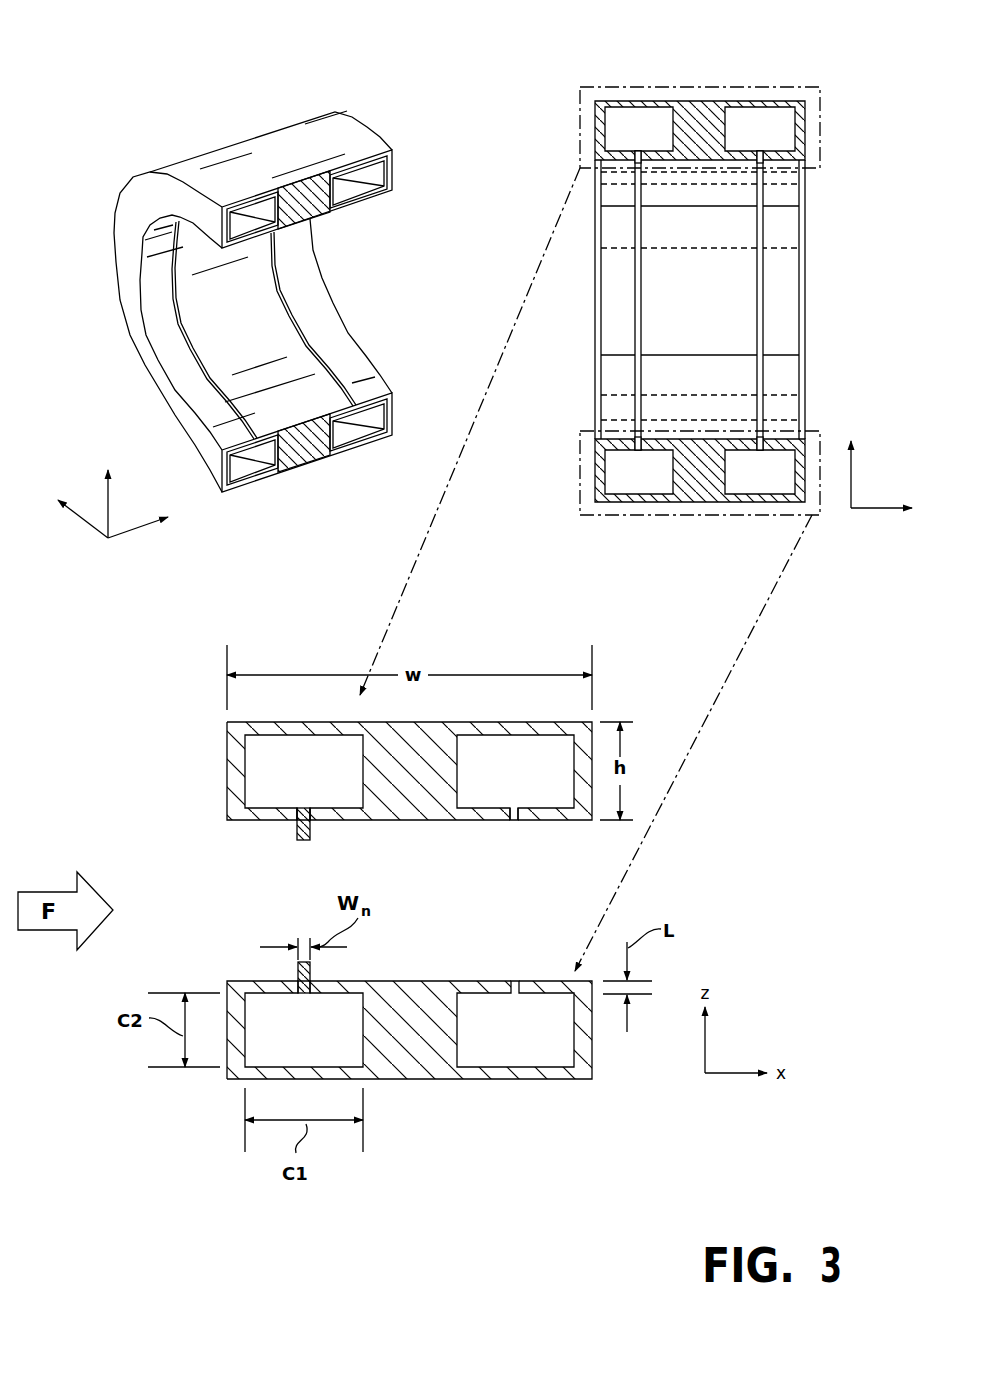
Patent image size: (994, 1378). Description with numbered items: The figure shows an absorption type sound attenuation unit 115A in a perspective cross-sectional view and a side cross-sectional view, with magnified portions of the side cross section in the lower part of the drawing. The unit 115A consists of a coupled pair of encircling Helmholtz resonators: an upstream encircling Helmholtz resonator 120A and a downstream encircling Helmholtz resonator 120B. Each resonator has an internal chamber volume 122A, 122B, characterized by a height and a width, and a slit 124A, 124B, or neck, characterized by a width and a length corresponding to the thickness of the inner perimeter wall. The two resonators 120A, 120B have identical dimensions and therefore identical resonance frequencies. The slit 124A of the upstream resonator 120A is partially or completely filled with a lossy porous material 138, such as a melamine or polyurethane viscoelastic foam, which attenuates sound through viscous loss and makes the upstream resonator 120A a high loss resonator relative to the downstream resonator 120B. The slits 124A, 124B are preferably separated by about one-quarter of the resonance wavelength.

The absorption mode sound attenuation unit 115A is at (148, 107).
The upstream encircling Helmholtz resonator 120A is at (574, 132).
The downstream encircling Helmholtz resonator 120B is at (810, 181).
The internal chamber volume 122A is at (304, 777).
The internal chamber volume 122B is at (515, 777).
The slit 124A is at (300, 847).
The slit 124B is at (513, 828).
The porous material 138 is at (312, 829).